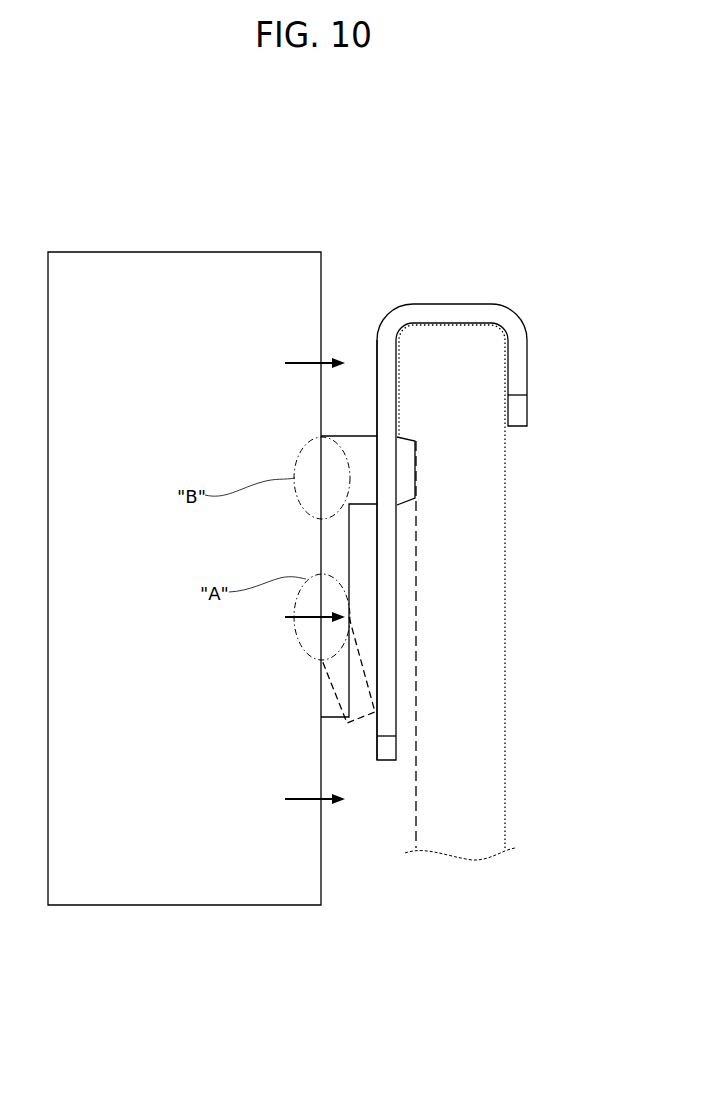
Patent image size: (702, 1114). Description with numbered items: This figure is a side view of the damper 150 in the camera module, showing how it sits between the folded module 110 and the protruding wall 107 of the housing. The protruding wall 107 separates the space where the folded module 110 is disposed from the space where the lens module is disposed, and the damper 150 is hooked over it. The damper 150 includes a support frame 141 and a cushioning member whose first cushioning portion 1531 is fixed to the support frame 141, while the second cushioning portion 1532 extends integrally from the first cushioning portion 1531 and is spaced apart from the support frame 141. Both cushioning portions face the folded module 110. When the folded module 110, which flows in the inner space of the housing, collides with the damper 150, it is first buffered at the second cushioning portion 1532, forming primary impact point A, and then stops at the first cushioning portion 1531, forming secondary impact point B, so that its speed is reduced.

The folded module 110 is at (142, 243).
The support frame 141 is at (377, 362).
The damper 150 is at (464, 290).
The protruding wall 107 is at (507, 548).
The first cushioning portion 1531 is at (350, 435).
The second cushioning portion 1532 is at (320, 684).